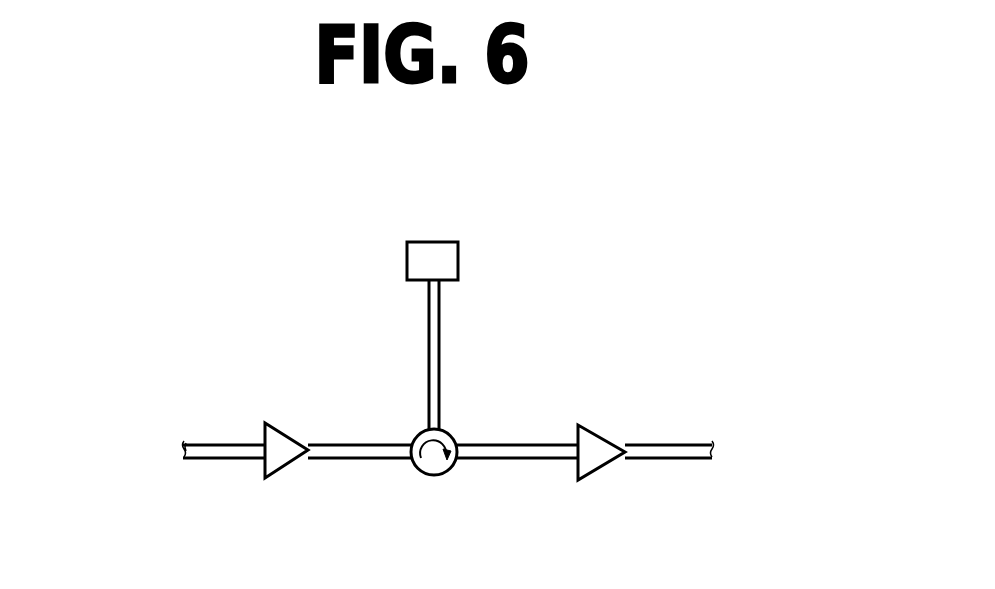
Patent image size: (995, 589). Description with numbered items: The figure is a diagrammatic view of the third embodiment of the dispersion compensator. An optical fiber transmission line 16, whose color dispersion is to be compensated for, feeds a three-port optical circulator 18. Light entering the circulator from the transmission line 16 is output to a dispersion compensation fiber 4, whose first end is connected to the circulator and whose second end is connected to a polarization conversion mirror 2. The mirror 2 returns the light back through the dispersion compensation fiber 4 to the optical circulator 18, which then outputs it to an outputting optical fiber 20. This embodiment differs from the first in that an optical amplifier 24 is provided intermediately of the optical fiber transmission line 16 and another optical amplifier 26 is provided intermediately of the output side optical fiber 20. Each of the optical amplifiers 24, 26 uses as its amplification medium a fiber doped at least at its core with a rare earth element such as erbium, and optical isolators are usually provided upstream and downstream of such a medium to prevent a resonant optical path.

The polarization conversion mirror 2 is at (434, 241).
The dispersion compensation fiber 4 is at (441, 323).
The optical fiber transmission line 16 is at (353, 461).
The optical circulator 18 is at (437, 476).
The outputting optical fiber 20 is at (520, 460).
The optical amplifier 24 is at (287, 430).
The optical amplifier 26 is at (596, 432).